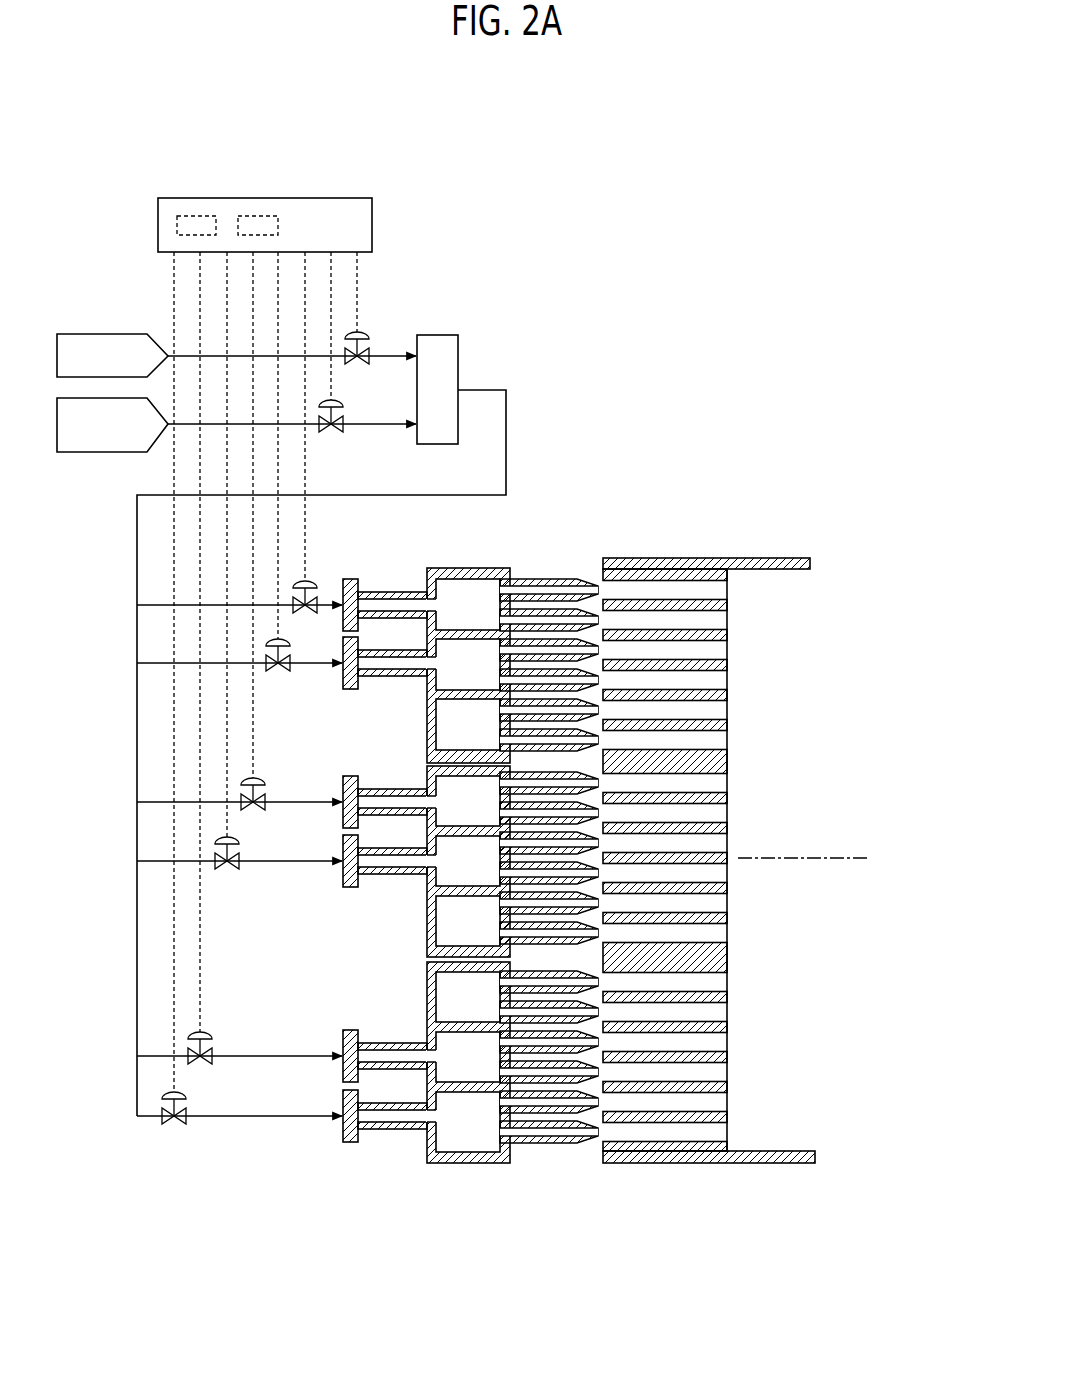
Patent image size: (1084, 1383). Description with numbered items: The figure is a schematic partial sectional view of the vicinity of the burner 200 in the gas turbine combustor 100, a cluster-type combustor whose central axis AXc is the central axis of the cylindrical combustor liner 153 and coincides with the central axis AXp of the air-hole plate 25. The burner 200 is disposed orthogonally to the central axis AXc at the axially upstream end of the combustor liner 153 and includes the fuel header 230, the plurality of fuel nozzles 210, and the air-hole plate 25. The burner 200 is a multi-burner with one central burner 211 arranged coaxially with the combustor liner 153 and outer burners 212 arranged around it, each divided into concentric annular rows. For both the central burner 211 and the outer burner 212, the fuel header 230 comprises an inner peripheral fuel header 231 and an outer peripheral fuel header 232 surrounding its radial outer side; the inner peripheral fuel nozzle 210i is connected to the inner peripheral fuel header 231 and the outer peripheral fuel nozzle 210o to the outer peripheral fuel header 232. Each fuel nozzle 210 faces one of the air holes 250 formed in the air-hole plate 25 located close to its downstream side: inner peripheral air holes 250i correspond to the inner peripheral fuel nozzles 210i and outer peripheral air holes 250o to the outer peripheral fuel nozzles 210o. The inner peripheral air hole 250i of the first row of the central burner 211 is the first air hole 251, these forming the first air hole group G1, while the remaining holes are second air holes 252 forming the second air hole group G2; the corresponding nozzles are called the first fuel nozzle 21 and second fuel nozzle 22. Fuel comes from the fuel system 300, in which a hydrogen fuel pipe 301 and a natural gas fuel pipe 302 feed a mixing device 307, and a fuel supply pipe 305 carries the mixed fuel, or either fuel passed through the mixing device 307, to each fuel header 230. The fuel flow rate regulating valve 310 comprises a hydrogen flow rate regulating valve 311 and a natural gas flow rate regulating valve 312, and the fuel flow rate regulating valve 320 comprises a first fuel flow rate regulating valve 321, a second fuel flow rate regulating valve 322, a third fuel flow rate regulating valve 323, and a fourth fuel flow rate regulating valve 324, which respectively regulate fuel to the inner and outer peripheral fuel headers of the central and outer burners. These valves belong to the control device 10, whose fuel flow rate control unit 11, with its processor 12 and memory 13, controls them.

The control device 10 is at (272, 659).
The fuel flow rate control unit 11 is at (274, 196).
The processor 12 is at (193, 214).
The memory 13 is at (258, 214).
The gas turbine combustor 100 is at (706, 338).
The fuel system 300 is at (566, 383).
The hydrogen fuel pipe 301 is at (386, 354).
The natural gas fuel pipe 302 is at (375, 420).
The fuel supply pipe 305 is at (458, 493).
The mixing device 307 is at (460, 367).
The fuel flow rate regulating valve 310 is at (401, 383).
The hydrogen flow rate regulating valve 311 is at (371, 349).
The natural gas flow rate regulating valve 312 is at (337, 433).
The fuel flow rate regulating valve 320 is at (245, 841).
The first fuel flow rate regulating valve 321 is at (232, 871).
The second fuel flow rate regulating valve 322 is at (241, 809).
The third fuel flow rate regulating valve 323 is at (287, 671).
The fourth fuel flow rate regulating valve 324 is at (319, 601).
The burner 200 is at (403, 1188).
The central burner 211 is at (408, 926).
The outer burner 212 is at (470, 561).
The fuel header 230 is at (410, 863).
The inner peripheral fuel header 231 is at (445, 665).
The outer peripheral fuel header 232 is at (445, 590).
The fuel nozzle 210 is at (696, 881).
The outer peripheral fuel nozzle 210o is at (522, 638).
The inner peripheral fuel nozzle 210i is at (550, 728).
The first fuel nozzle 21 is at (600, 843).
The second fuel nozzle 22 is at (696, 881).
The air-hole plate 25 is at (838, 705).
The air hole 250 is at (772, 825).
The outer peripheral air hole 250o is at (703, 588).
The inner peripheral air hole 250i is at (718, 662).
The first air hole 251 is at (770, 863).
The second air hole 252 is at (772, 825).
The first air hole group G1 is at (812, 900).
The second air hole group G2 is at (772, 825).
The central axis of the gas turbine combustor AXc is at (838, 877).
The central axis of the air-hole plate AXp is at (783, 861).
The combustor liner 153 is at (753, 1166).